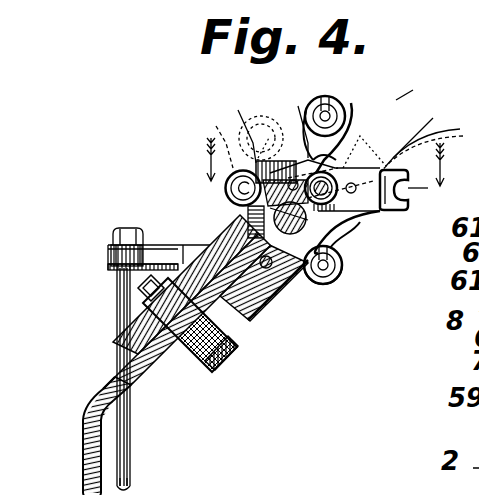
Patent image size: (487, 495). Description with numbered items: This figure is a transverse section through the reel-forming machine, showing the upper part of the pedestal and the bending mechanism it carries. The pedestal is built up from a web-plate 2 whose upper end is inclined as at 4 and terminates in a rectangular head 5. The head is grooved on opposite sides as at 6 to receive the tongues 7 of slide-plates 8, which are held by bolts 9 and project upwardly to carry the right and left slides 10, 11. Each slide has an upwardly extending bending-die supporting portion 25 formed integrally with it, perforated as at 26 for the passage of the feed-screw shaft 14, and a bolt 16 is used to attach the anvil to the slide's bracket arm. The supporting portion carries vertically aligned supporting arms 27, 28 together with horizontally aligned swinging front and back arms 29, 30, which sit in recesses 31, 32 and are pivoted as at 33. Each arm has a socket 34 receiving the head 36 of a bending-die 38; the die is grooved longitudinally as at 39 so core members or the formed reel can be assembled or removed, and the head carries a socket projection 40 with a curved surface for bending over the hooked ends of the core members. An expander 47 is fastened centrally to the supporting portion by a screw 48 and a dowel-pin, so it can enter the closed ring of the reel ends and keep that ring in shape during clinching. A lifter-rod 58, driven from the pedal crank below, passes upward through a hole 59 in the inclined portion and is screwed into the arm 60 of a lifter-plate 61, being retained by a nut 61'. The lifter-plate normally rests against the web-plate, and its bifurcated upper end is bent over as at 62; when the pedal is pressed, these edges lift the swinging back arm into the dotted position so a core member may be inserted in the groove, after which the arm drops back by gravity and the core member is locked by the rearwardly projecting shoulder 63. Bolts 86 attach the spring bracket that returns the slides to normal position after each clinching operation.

The web-plate 2 is at (75, 467).
The inclined portion of the web-plate 4 is at (170, 365).
The rectangular head 5 is at (104, 340).
The grooves of the head 6 is at (132, 285).
The tongues of slide-plates 7 is at (145, 300).
The slide-plates 8 is at (107, 268).
The bolts 9 is at (227, 350).
The right slide 10 is at (266, 272).
The left slide 11 is at (195, 240).
The feed-screw shaft 14 is at (322, 212).
The bolt 16 is at (218, 178).
The bending-die supporting portion 25 is at (330, 209).
The perforation 26 is at (337, 228).
The supporting arm 27 is at (418, 79).
The supporting arm 28 is at (332, 268).
The swinging front arm 29 is at (429, 143).
The swinging back arm 30 is at (209, 133).
The recess 31 is at (424, 121).
The recess 32 is at (268, 152).
The pivot 33 is at (360, 132).
The socket 34 is at (333, 102).
The head of bending-die 36 is at (226, 186).
The bending-die 38 is at (330, 296).
The longitudinal groove 39 is at (317, 103).
The socket projection 40 is at (380, 194).
The expander 47 is at (200, 224).
The screw 48 is at (343, 175).
The lifter-rod 58 is at (125, 462).
The hole 59 is at (96, 376).
The arm of lifter-plate 60 is at (103, 247).
The lifter-plate 61 is at (93, 237).
The nut 61' is at (97, 213).
The bent-over edges 62 is at (232, 208).
The shoulder 63 is at (234, 118).
The bolts 86 is at (230, 343).